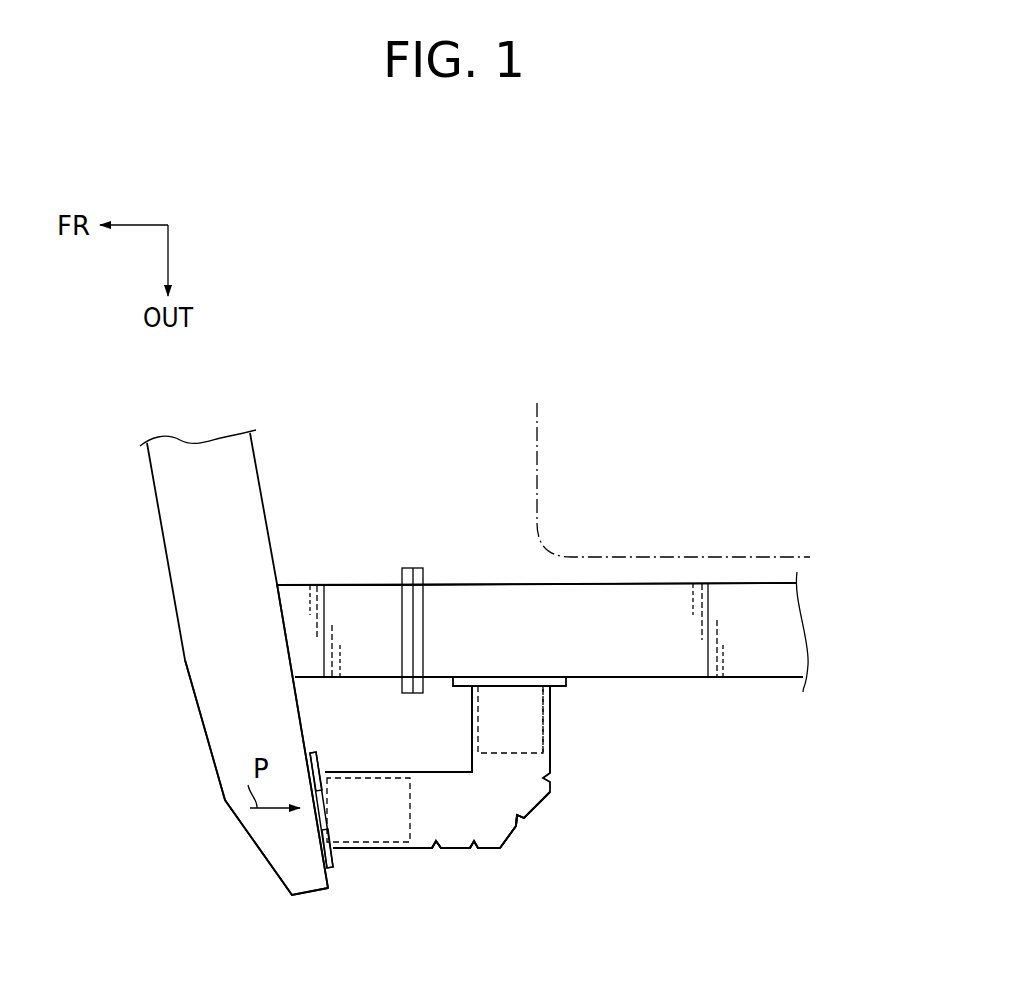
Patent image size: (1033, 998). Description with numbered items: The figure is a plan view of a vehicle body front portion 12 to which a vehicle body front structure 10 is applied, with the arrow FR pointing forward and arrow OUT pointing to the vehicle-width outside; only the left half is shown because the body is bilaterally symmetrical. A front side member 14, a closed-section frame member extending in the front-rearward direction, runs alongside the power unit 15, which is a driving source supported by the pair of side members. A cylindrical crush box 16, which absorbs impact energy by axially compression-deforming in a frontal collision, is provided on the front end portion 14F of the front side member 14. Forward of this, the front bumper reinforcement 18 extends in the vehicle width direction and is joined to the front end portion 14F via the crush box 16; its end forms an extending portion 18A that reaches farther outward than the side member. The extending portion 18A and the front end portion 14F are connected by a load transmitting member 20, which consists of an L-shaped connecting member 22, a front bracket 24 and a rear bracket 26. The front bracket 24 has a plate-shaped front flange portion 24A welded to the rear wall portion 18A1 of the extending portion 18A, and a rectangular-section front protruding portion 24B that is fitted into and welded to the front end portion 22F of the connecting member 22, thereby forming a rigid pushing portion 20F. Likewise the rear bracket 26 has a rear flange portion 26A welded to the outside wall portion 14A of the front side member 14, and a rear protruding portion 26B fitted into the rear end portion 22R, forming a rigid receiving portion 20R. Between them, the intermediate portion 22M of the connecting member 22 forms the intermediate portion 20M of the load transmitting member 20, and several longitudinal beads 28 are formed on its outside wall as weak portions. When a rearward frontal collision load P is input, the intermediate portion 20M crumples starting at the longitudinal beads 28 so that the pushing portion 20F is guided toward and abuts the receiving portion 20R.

The vehicle body front structure 10 is at (372, 284).
The vehicle body front portion 12 is at (379, 379).
The front side member 14 is at (767, 681).
The outside wall portion 14A is at (677, 679).
The front end portion 14F is at (455, 585).
The power unit 15 is at (535, 430).
The crush box 16 is at (348, 585).
The front bumper reinforcement 18 is at (159, 563).
The extending portion 18A is at (213, 771).
The rear wall portion 18A1 is at (299, 712).
The load transmitting member 20 is at (548, 865).
The pushing portion 20F is at (372, 858).
The receiving portion 20R is at (560, 725).
The intermediate portion 20M is at (553, 803).
The connecting member 22 is at (507, 850).
The front end portion 22F is at (343, 771).
The rear end portion 22R is at (470, 705).
The intermediate portion 22M is at (525, 820).
The front bracket 24 is at (398, 851).
The front flange portion 24A is at (333, 819).
The front protruding portion 24B is at (348, 852).
The rear bracket 26 is at (552, 752).
The rear flange portion 26A is at (523, 691).
The rear protruding portion 26B is at (555, 708).
The longitudinal bead 28 is at (437, 850).